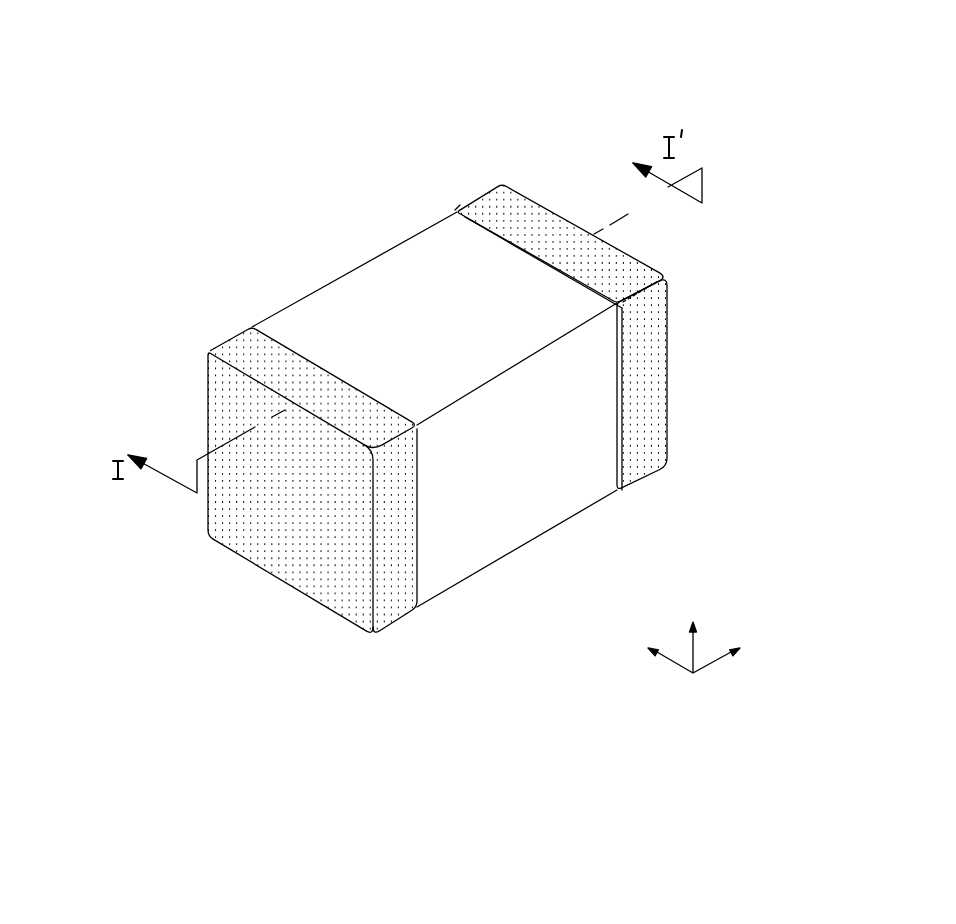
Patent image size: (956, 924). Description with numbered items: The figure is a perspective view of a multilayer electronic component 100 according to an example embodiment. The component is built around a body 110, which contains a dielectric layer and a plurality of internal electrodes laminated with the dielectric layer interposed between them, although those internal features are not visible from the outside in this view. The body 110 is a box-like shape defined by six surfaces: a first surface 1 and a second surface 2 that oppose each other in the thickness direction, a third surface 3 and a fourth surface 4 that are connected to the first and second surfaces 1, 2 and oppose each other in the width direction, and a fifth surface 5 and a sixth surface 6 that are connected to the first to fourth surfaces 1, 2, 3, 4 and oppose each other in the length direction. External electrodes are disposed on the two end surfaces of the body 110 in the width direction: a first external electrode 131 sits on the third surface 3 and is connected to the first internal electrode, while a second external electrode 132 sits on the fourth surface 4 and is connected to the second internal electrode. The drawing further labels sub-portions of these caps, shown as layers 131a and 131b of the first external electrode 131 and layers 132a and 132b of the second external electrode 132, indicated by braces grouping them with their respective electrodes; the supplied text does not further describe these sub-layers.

The multilayer electronic component 100 is at (262, 58).
The body 110 is at (367, 292).
The first surface 1 is at (469, 550).
The second surface 2 is at (431, 276).
The third surface 3 is at (233, 526).
The fourth surface 4 is at (650, 360).
The fifth surface 5 is at (559, 497).
The sixth surface 6 is at (331, 327).
The first external electrode 131 is at (227, 252).
The first electrode layer 131a is at (227, 397).
The first plating layer 131b is at (237, 347).
The second external electrode 132 is at (517, 75).
The second electrode layer 132a is at (548, 196).
The second plating layer 132b is at (492, 203).